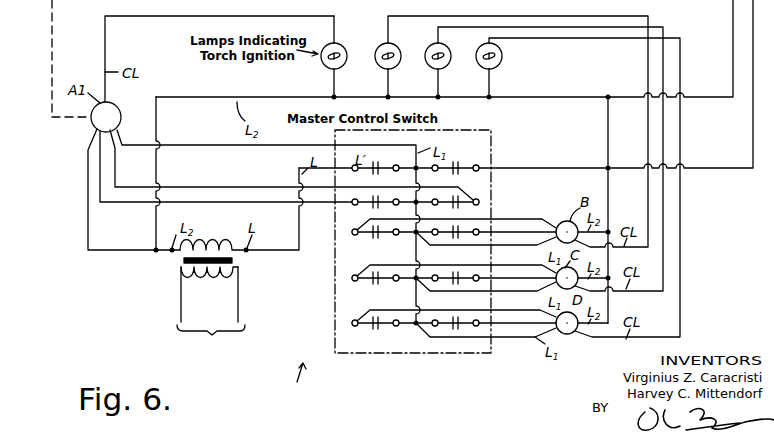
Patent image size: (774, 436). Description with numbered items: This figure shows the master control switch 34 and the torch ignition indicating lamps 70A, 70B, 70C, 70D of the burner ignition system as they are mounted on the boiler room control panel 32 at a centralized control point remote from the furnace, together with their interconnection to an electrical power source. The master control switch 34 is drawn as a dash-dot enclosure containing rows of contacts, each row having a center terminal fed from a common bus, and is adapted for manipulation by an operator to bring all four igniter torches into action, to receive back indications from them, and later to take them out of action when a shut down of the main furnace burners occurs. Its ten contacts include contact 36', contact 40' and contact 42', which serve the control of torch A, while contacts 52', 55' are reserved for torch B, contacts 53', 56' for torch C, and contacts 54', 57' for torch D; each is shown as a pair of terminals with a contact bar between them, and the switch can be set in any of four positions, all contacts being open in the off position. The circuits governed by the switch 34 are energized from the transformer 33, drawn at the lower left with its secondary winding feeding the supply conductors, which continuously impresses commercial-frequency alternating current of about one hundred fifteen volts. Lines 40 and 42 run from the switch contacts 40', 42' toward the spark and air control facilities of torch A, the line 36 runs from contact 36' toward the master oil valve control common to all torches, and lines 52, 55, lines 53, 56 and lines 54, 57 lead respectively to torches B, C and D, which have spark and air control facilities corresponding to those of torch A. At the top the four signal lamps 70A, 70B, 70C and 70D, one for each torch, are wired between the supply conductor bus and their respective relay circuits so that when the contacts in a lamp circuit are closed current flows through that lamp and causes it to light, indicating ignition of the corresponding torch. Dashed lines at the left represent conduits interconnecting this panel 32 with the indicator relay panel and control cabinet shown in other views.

The control panel 32 is at (343, 422).
The transformer 33 is at (185, 262).
The master control switch 34 is at (455, 125).
The line 36 is at (616, 84).
The master switch contact 36' is at (458, 157).
The line 40 is at (226, 181).
The master switch contact 40' is at (368, 212).
The line 42 is at (291, 165).
The master switch contact 42' is at (477, 192).
The line 52 is at (456, 214).
The master switch contact 52' is at (369, 243).
The line 53 is at (424, 260).
The master switch contact 53' is at (368, 289).
The line 54 is at (424, 305).
The master switch contact 54' is at (380, 332).
The line 55 is at (517, 215).
The master switch contact 55' is at (454, 244).
The line 56 is at (523, 260).
The master switch contact 56' is at (458, 265).
The line 57 is at (523, 317).
The master switch contact 57' is at (457, 318).
The torch ignition indicating lamp 70A is at (322, 62).
The torch ignition indicating lamp 70B is at (377, 63).
The torch ignition indicating lamp 70C is at (427, 63).
The torch ignition indicating lamp 70D is at (478, 64).